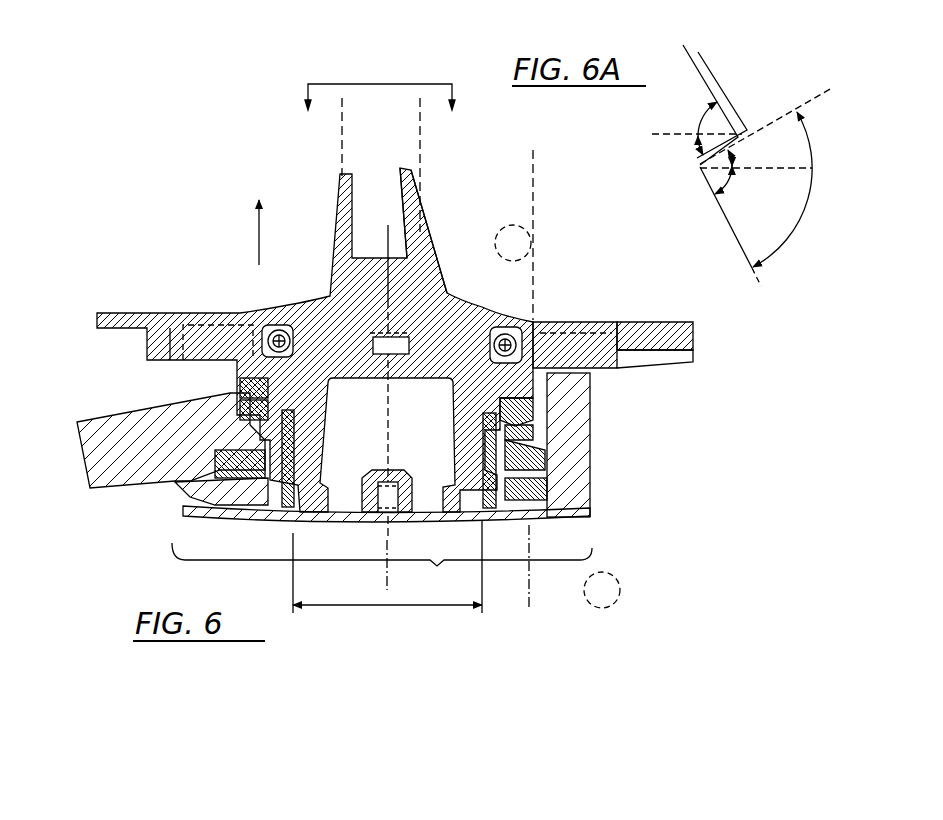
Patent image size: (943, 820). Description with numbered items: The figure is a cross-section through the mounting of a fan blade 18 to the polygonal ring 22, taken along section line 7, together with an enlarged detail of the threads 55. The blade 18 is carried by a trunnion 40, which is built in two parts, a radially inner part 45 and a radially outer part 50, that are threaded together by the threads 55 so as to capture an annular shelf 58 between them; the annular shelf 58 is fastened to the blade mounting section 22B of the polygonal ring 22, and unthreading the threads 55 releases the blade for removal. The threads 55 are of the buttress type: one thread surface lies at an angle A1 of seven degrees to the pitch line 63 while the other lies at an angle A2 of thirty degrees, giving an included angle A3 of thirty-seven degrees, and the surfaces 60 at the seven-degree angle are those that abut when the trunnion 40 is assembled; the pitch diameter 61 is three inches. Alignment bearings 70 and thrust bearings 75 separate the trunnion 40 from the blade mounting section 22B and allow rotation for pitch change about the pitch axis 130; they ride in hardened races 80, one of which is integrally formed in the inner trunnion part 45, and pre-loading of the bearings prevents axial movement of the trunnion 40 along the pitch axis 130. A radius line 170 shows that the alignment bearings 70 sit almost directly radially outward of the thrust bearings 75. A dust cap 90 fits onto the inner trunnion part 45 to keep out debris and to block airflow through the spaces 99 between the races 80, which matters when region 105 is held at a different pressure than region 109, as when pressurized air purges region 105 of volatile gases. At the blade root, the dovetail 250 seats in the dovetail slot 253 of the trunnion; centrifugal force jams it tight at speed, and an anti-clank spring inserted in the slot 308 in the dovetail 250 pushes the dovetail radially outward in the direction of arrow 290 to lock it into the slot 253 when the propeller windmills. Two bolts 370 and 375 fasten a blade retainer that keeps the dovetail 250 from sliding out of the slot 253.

In FIG. 6, the section line 7- 7 is at (376, 158).
In FIG. 6, the fan blade 18 is at (390, 138).
In FIG. 6, the polygonal ring 22 is at (87, 458).
In FIG. 6, the blade mounting section 22B is at (382, 565).
In FIG. 6, the trunnion 40 is at (553, 300).
In FIG. 6, the radially inner trunnion part 45 is at (553, 490).
In FIG. 6, the radially outer trunnion part 50 is at (573, 343).
In FIG. 6, the threads 55 is at (467, 457).
In FIG. 6, the annular shelf 58 is at (515, 452).
In FIG. 6A, the thread surfaces 60 is at (730, 114).
In FIG. 6, the pitch diameter 61 is at (400, 606).
In FIG. 6A, the pitch line 63 is at (653, 133).
In FIG. 6, the alignment bearings 70 is at (237, 390).
In FIG. 6, the thrust bearings 75 is at (247, 503).
In FIG. 6, the hardened races 80 is at (227, 413).
In FIG. 6, the dust cap 90 is at (560, 512).
In FIG. 6, the spaces between the races 99 is at (205, 505).
In FIG. 6, the region 105 is at (620, 590).
In FIG. 6, the region 109 is at (508, 224).
In FIG. 6, the pitch axis 130 is at (385, 580).
In FIG. 6, the radius line 170 is at (528, 608).
In FIG. 6, the dovetail 250 is at (445, 293).
In FIG. 6, the dovetail slot 253 is at (452, 293).
In FIG. 6, the arrow 290 is at (262, 228).
In FIG. 6, the slot 308 is at (378, 337).
In FIG. 6, the bolt 370 is at (275, 330).
In FIG. 6, the bolt 375 is at (505, 340).
In FIG. 6A, the angle A1 is at (688, 152).
In FIG. 6A, the angle A2 is at (695, 118).
In FIG. 6A, the included angle A3 is at (812, 152).